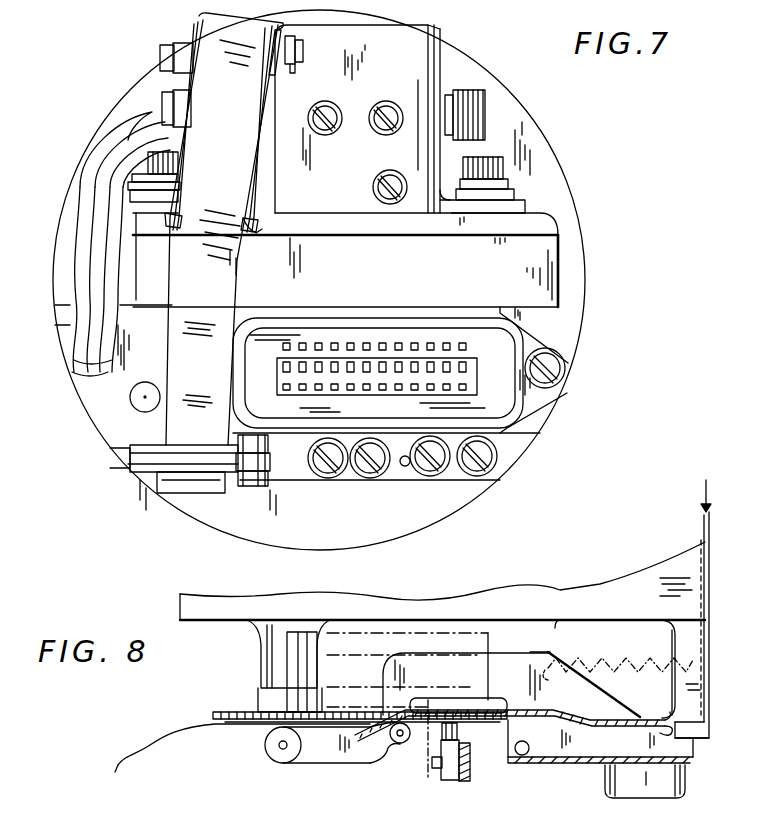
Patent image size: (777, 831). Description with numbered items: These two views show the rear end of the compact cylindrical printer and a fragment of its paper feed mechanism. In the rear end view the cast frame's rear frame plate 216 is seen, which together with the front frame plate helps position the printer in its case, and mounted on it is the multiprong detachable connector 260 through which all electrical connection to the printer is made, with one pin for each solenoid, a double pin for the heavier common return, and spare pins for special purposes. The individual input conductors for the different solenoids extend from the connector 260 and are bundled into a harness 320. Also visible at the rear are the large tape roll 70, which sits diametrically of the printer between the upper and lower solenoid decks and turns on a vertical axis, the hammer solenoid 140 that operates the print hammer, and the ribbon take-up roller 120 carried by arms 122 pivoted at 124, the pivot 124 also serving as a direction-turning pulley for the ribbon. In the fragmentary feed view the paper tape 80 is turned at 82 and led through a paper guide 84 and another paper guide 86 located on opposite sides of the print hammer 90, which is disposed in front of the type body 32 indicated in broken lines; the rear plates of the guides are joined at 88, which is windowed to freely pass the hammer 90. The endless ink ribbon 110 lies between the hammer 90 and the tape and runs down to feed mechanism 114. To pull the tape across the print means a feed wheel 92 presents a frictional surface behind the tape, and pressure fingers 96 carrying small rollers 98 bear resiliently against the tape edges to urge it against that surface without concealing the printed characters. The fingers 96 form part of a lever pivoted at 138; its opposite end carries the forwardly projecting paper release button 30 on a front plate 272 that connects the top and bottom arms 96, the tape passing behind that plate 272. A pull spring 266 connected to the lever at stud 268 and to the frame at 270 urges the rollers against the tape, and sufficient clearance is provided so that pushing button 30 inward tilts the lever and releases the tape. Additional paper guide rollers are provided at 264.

In FIG. 8, the paper release button 30 is at (645, 790).
In FIG. 8, the type body 32 is at (480, 700).
In FIG. 7, the tape roll 70 is at (540, 268).
In FIG. 8, the paper tape 80 is at (710, 533).
In FIG. 8, the turn of the paper tape 82 is at (705, 728).
In FIG. 8, the paper guide 84 is at (556, 716).
In FIG. 8, the paper guide 86 is at (385, 748).
In FIG. 8, the joined rear plate part 88 is at (497, 708).
In FIG. 8, the print hammer 90 is at (450, 782).
In FIG. 8, the feed wheel 92 is at (238, 711).
In FIG. 8, the pressure fingers 96 is at (348, 760).
In FIG. 8, the rollers 98 is at (263, 745).
In FIG. 8, the ink ribbon 110 is at (426, 747).
In FIG. 8, the ribbon feed mechanism 114 is at (473, 772).
In FIG. 7, the take-up roller 120 is at (247, 232).
In FIG. 7, the arms 122 is at (258, 176).
In FIG. 7, the pivot 124 is at (296, 50).
In FIG. 8, the lever pivot 138 is at (528, 755).
In FIG. 7, the hammer solenoid 140 is at (403, 86).
In FIG. 7, the rear frame plate 216 is at (488, 87).
In FIG. 7, the multiprong detachable connector 260 is at (495, 403).
In FIG. 8, the paper guide rollers 264 is at (405, 745).
In FIG. 8, the pull spring 266 is at (592, 660).
In FIG. 8, the stud 268 is at (550, 652).
In FIG. 8, the frame anchorage 270 is at (700, 660).
In FIG. 8, the front plate 272 is at (588, 765).
In FIG. 7, the wire harness 320 is at (92, 205).